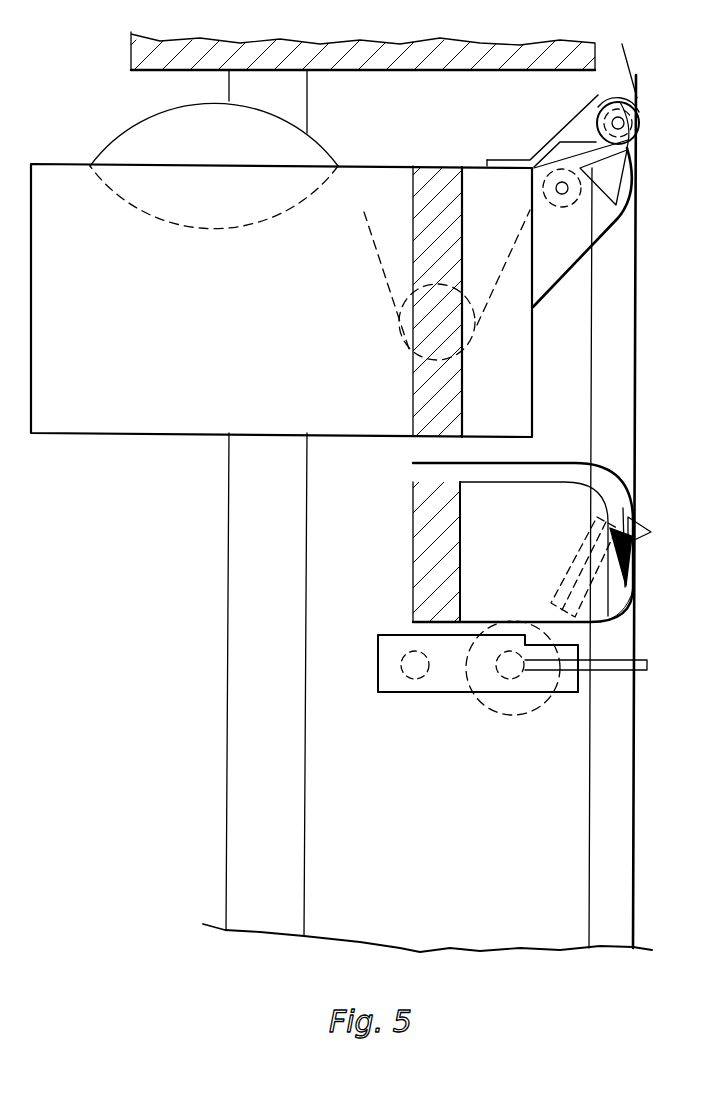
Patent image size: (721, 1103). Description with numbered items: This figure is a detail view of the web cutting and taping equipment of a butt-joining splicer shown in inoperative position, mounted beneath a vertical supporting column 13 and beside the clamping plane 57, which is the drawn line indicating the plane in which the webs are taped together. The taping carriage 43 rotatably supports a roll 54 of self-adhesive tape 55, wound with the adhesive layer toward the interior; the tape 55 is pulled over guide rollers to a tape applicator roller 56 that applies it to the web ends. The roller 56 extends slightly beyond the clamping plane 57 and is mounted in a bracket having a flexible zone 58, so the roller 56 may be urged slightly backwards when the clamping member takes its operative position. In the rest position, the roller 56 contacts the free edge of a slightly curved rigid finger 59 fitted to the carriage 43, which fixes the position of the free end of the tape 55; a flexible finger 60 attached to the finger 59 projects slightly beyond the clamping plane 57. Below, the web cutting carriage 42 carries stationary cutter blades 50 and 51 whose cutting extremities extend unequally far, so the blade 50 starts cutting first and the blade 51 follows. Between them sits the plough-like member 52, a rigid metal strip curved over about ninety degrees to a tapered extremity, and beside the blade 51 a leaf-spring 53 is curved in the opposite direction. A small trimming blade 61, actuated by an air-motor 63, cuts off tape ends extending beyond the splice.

The vertical supporting column 13 is at (393, 58).
The web cutting carriage 42 is at (520, 557).
The taping carriage 43 is at (360, 390).
The cutter blade 50 is at (638, 542).
The cutter blade 51 is at (640, 528).
The plough-like member 52 is at (615, 490).
The leaf-spring 53 is at (636, 612).
The roll of self-adhesive tape 54 is at (120, 145).
The self-adhesive tape 55 is at (500, 286).
The tape applicator roller 56 is at (637, 104).
The clamping plane 57 is at (636, 330).
The flexible zone 58 is at (553, 145).
The rigid finger 59 is at (632, 152).
The flexible finger 60 is at (641, 178).
The trimming blade 61 is at (642, 676).
The air-motor 63 is at (540, 708).